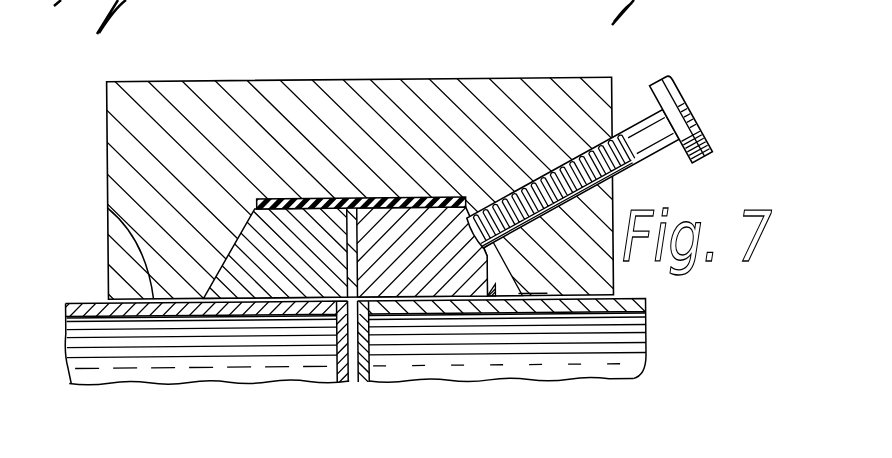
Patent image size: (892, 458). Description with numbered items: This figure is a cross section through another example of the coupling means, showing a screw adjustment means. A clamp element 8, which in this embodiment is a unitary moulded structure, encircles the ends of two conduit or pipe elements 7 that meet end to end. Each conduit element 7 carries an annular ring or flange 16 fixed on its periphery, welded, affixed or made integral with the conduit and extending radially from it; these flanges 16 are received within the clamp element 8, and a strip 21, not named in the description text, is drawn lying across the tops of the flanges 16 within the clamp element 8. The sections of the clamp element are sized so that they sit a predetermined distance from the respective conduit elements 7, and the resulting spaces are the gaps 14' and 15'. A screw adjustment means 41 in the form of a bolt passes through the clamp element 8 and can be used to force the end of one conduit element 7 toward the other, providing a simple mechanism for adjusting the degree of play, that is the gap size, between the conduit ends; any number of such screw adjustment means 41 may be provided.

The conduit element 7 is at (160, 355).
The clamp element 8 is at (529, 71).
The gap 14' is at (105, 240).
The gap 15' is at (537, 353).
The annular ring 16 is at (275, 275).
The cover strip 21 is at (390, 204).
The screw adjustment means 41 is at (690, 99).